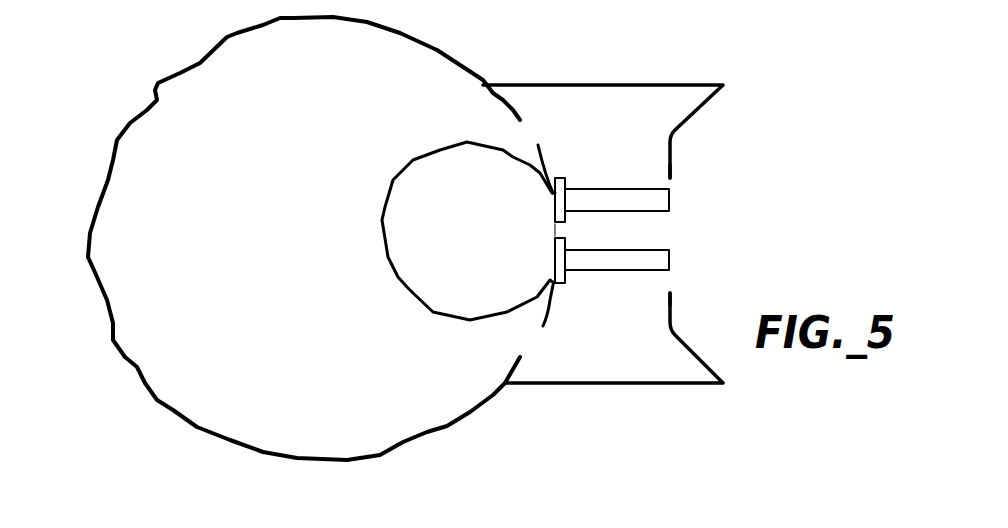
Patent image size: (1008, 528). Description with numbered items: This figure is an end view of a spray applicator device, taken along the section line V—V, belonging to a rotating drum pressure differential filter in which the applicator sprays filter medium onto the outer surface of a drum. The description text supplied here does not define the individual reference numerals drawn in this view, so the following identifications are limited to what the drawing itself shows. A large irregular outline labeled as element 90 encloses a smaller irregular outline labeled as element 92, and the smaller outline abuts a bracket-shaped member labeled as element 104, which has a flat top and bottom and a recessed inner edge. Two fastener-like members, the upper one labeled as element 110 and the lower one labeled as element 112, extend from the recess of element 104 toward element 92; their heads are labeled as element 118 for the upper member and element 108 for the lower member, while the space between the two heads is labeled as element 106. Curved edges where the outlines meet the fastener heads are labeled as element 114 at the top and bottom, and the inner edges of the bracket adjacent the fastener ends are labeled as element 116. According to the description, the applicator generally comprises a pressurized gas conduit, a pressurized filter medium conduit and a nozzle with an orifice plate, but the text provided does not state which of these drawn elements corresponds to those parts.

The blade body 90 is at (441, 52).
The hub 92 is at (383, 211).
The mounting bracket 104 is at (627, 70).
The gap between fasteners 106 is at (552, 227).
The lower fastener head 108 is at (552, 253).
The upper fastener 110 is at (606, 198).
The lower fastener 112 is at (619, 245).
The curved edge 114 is at (527, 130).
The bracket inner edge 116 is at (675, 182).
The upper fastener head 118 is at (552, 200).